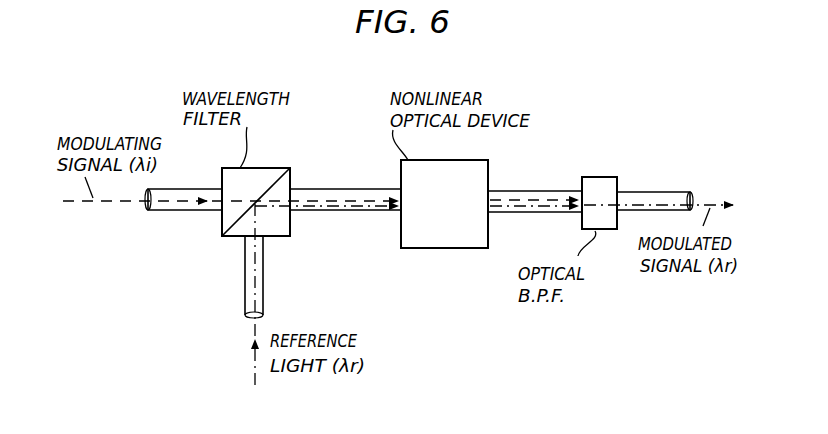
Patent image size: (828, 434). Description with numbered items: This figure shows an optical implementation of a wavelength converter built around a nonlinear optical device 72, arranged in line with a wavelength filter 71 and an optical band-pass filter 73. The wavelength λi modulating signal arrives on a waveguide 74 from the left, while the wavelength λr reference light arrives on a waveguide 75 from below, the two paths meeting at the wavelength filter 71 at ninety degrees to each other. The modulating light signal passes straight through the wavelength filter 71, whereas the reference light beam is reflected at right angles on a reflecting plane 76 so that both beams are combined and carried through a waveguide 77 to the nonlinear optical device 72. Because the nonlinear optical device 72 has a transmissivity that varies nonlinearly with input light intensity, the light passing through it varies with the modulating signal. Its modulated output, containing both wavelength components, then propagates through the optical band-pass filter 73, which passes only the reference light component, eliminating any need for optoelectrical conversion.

The wavelength filter 71 is at (270, 168).
The nonlinear optical device 72 is at (432, 248).
The optical band-pass filter 73 is at (600, 177).
The waveguide 74 is at (197, 211).
The waveguide 75 is at (265, 290).
The reflecting plane 76 is at (284, 176).
The waveguide 77 is at (340, 212).